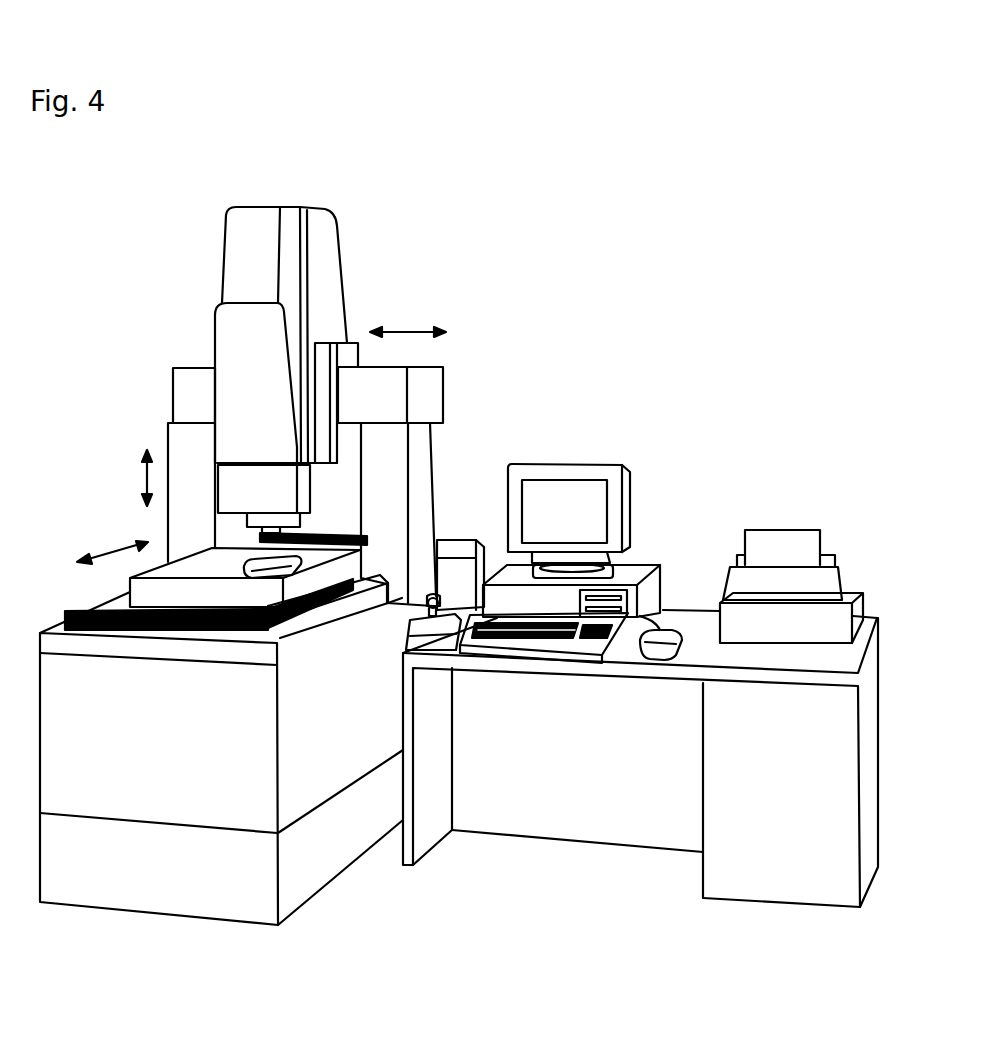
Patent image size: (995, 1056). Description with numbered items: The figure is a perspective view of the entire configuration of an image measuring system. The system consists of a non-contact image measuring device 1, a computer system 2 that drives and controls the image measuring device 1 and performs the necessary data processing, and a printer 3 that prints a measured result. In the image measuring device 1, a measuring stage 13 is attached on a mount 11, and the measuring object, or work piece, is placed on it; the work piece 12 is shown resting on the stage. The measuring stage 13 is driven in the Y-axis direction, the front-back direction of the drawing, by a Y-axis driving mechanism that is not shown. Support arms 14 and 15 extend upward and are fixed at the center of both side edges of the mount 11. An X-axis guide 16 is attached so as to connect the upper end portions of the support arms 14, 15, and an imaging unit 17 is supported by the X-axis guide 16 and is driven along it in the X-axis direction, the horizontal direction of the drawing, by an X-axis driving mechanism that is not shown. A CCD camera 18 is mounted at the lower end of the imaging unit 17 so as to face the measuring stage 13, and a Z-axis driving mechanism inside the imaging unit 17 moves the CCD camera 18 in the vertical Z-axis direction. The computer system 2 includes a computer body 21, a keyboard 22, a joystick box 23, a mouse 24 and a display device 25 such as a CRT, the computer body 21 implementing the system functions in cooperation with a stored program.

The non-contact image measuring device 1 is at (360, 237).
The computer system 2 is at (640, 456).
The printer 3 is at (806, 510).
The mount 11 is at (88, 608).
The workpiece 12 is at (277, 572).
The measuring stage 13 is at (216, 558).
The support arm 14 is at (169, 443).
The support arm 15 is at (427, 478).
The X-axis guide 16 is at (193, 368).
The imaging unit 17 is at (226, 248).
The CCD camera 18 is at (270, 530).
The computer body 21 is at (640, 564).
The keyboard 22 is at (556, 647).
The joystick box 23 is at (420, 628).
The mouse 24 is at (655, 645).
The display device 25 is at (630, 506).